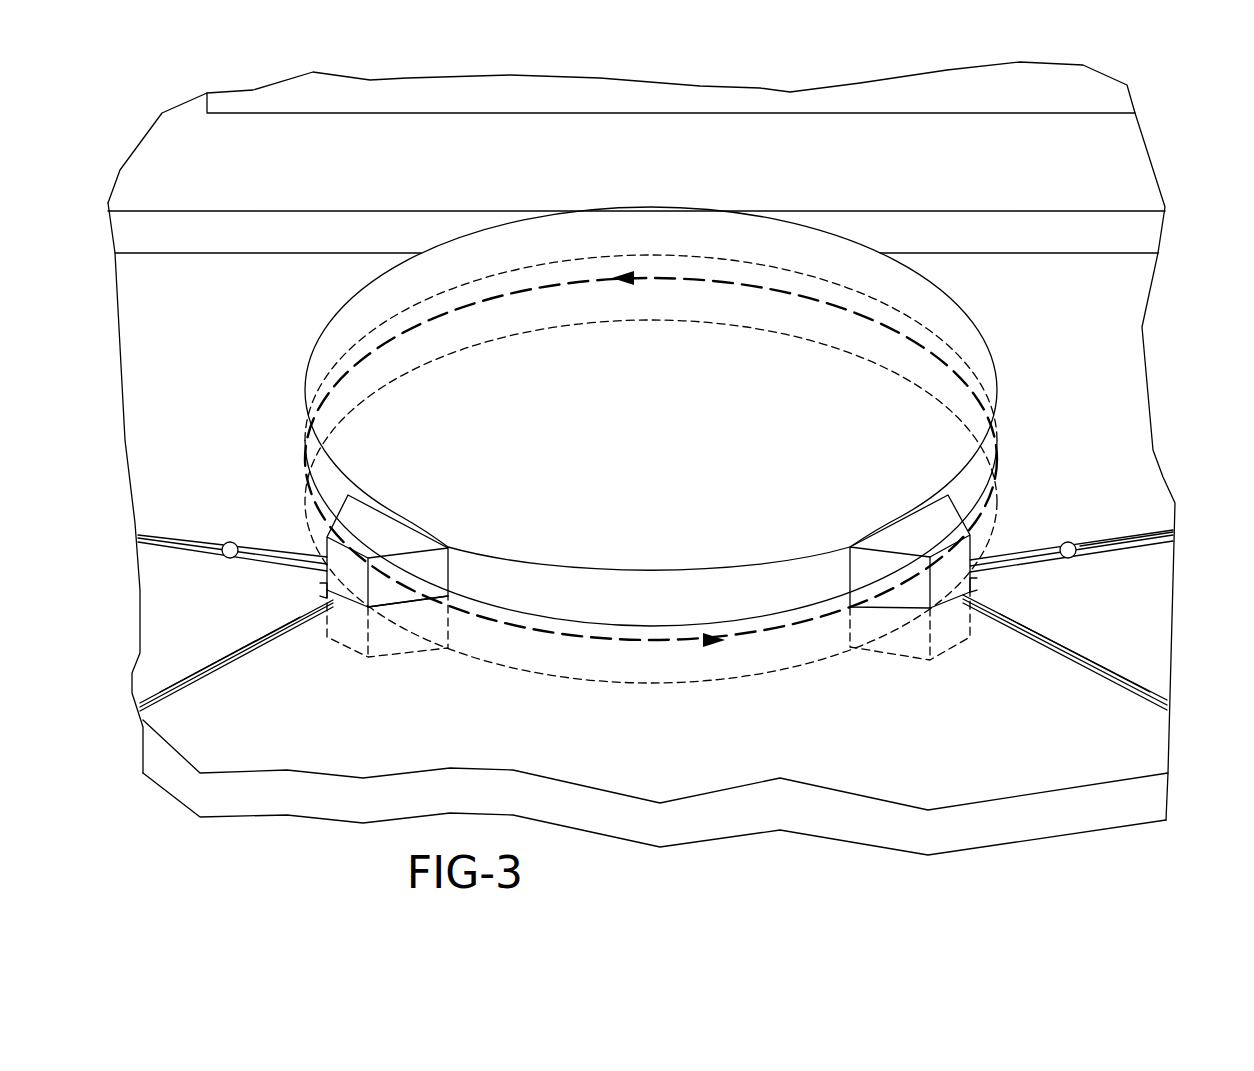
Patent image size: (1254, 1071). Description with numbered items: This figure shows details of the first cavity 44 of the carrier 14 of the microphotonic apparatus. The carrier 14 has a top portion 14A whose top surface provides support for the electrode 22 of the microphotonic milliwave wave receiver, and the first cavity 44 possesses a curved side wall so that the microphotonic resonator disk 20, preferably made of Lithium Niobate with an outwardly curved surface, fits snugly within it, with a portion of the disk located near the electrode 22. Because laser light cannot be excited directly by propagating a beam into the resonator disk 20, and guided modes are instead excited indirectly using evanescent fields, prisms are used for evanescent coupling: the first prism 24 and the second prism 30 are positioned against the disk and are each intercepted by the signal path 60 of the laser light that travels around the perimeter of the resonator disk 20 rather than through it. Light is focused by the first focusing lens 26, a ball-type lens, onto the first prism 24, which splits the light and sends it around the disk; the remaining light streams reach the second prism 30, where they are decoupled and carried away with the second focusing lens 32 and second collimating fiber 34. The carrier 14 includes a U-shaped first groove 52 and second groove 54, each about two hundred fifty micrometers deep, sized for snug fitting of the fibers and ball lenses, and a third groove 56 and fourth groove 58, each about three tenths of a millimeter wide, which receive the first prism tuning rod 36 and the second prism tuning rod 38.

The carrier 14 is at (1125, 765).
The top portion of the carrier 14A is at (1030, 83).
The microphotonic resonator disk 20 is at (752, 385).
The electrode 22 is at (368, 170).
The first prism 24 is at (382, 590).
The first focusing lens 26 is at (232, 543).
The second prism 30 is at (917, 590).
The second focusing lens 32 is at (1068, 543).
The second collimating fiber 34 is at (1108, 548).
The first prism tuning rod 36 is at (265, 645).
The second prism tuning rod 38 is at (1030, 645).
The first cavity 44 is at (598, 660).
The first groove 52 is at (252, 565).
The second groove 54 is at (1047, 567).
The third groove 56 is at (210, 676).
The fourth groove 58 is at (1087, 675).
The signal path 60 is at (513, 295).